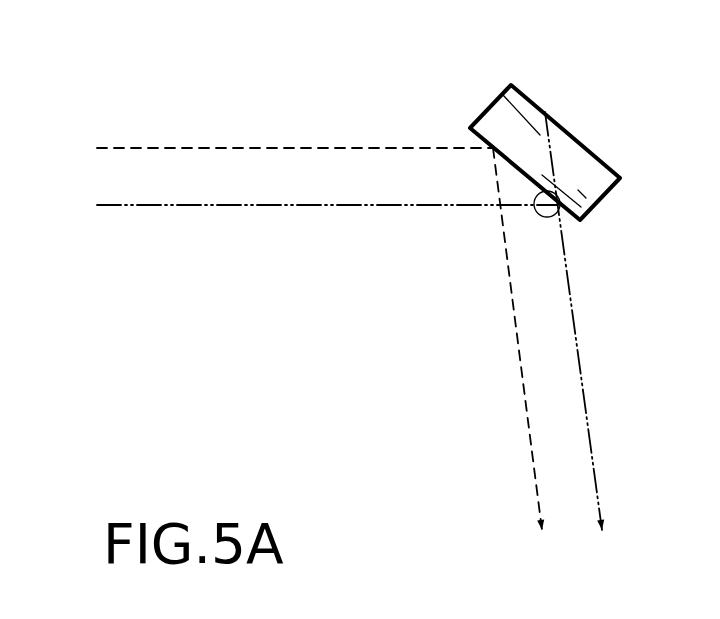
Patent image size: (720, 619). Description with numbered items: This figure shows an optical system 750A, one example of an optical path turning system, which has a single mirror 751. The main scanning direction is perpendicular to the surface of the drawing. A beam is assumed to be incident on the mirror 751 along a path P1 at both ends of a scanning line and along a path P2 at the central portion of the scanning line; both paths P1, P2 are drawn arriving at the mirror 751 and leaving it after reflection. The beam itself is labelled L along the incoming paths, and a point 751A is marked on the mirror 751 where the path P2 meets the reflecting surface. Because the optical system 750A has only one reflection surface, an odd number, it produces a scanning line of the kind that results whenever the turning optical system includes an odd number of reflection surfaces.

The optical system 750A is at (565, 147).
The mirror 751 is at (619, 115).
The reflecting point 751A is at (548, 214).
The path P1 is at (307, 350).
The path P2 is at (337, 340).
The light beam L is at (262, 147).